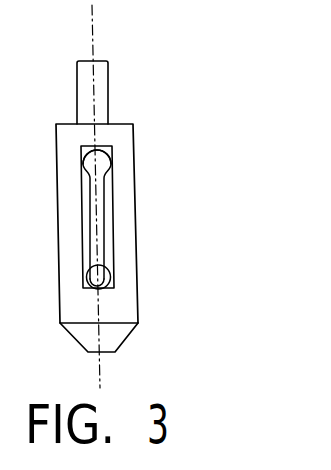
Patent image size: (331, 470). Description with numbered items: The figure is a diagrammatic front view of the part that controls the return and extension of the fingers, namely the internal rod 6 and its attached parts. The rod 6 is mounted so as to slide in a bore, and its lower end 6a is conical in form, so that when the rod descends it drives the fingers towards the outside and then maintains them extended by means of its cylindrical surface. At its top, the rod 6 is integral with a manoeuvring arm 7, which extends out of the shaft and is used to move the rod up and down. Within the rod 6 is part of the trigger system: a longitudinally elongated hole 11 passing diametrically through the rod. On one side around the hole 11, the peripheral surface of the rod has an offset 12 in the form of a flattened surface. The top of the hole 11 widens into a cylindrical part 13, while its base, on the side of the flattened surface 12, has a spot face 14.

The internal rod 6 is at (65, 230).
The lower end 6a is at (72, 342).
The manoeuvring arm 7 is at (106, 105).
The hole 11 is at (98, 226).
The offset 12 is at (83, 195).
The cylindrical part 13 is at (110, 173).
The spot face 14 is at (108, 282).